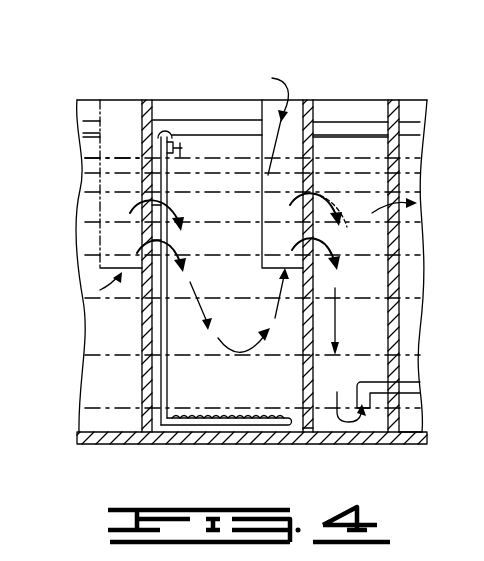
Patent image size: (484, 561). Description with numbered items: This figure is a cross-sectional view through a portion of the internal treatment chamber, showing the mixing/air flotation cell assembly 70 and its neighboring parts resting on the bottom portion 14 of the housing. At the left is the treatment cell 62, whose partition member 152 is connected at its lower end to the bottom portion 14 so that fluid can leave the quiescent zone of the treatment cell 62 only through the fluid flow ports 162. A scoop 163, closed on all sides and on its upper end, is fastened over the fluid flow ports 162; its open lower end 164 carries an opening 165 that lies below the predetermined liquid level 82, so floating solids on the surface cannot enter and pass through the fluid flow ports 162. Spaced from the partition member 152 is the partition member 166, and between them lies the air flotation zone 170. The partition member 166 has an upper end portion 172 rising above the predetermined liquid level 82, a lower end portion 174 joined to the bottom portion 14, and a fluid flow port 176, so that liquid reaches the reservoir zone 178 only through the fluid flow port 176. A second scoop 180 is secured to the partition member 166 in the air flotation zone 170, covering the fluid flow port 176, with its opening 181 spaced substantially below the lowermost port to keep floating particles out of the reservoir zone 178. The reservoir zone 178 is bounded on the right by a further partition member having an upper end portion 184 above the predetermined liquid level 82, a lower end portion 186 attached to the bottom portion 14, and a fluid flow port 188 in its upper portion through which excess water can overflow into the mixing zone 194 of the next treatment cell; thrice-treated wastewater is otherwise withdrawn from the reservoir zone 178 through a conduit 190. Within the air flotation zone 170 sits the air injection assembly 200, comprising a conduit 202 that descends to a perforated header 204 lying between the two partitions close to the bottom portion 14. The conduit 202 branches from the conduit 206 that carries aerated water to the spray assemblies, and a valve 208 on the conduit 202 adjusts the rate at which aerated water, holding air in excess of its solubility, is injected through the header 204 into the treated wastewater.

The bottom portion 14 is at (195, 443).
The treatment cell 62 is at (85, 100).
The mixing/air flotation cell assembly 70 is at (269, 122).
The predetermined liquid level 82 is at (93, 152).
The partition member 152 is at (148, 100).
The fluid flow ports 162 is at (190, 239).
The scoop 163 is at (127, 108).
The lower end 164 is at (102, 249).
The opening 165 is at (102, 273).
The partition member 166 is at (357, 207).
The air flotation zone 170 is at (222, 212).
The upper end portion 172 is at (305, 102).
The lower end portion 174 is at (302, 428).
The fluid flow port 176 is at (310, 240).
The reservoir zone 178 is at (358, 207).
The scoop 180 is at (292, 220).
The opening 181 is at (273, 277).
The upper end portion 184 is at (401, 107).
The lower end portion 186 is at (407, 423).
The fluid flow port 188 is at (400, 193).
The conduit 190 is at (362, 382).
The mixing zone 194 is at (417, 138).
The air injection assembly 200 is at (172, 370).
The conduit 202 is at (163, 392).
The perforated header 204 is at (230, 425).
The conduit 206 is at (172, 130).
The valve 208 is at (193, 150).